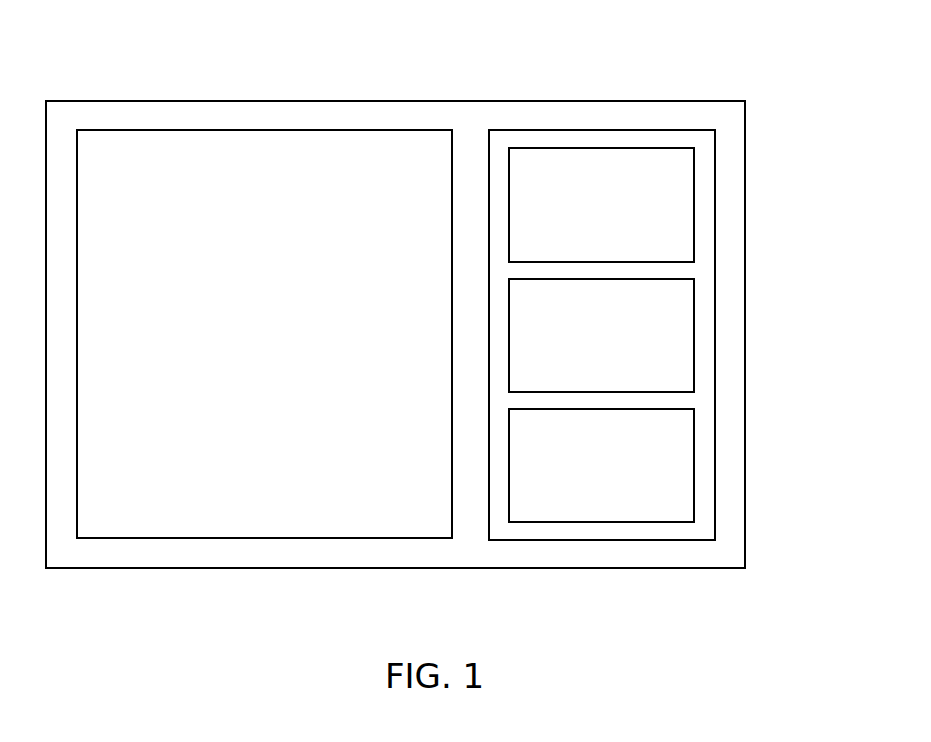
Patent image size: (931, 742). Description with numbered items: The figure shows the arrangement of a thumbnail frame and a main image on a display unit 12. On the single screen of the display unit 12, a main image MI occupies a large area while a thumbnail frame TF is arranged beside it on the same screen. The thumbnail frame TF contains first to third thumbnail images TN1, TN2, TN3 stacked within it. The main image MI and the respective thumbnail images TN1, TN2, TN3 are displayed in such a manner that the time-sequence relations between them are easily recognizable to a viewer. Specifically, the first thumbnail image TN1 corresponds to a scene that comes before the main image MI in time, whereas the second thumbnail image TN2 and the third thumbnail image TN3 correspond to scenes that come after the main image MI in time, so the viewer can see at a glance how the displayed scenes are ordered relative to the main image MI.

The display unit 12 is at (393, 568).
The main image MI is at (265, 130).
The thumbnail frame TF is at (603, 130).
The first thumbnail image TN1 is at (694, 204).
The second thumbnail image TN2 is at (694, 335).
The third thumbnail image TN3 is at (694, 465).